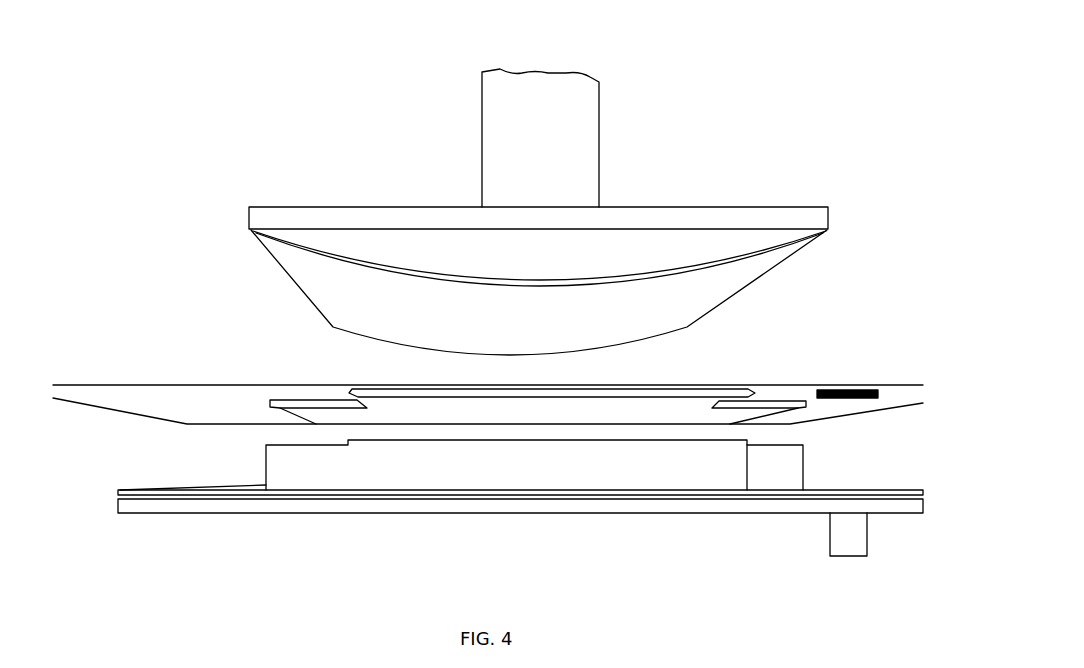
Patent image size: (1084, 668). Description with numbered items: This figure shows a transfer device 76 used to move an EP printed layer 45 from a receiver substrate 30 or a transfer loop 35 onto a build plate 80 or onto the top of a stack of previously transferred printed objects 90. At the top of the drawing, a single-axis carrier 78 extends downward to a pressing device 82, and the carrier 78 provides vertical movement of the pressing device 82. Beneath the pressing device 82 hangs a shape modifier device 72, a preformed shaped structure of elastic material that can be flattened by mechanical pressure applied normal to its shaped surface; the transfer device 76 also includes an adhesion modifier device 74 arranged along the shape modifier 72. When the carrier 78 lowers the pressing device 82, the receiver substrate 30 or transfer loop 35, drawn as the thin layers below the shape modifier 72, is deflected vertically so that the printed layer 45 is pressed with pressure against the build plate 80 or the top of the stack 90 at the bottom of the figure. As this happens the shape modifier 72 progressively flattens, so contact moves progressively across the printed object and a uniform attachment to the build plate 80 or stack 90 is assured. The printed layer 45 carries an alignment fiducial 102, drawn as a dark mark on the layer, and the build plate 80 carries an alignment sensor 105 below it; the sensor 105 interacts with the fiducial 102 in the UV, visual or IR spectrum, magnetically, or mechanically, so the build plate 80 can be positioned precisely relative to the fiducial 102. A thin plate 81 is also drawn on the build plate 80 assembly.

The transfer device 76 is at (409, 97).
The single-axis carrier 78 is at (587, 182).
The pressing device 82 is at (295, 220).
The shape modifier device 72 is at (633, 242).
The adhesion modifier device 74 is at (285, 242).
The receiver substrate 30 is at (112, 395).
The transfer loop 35 is at (488, 404).
The EP printed layer 45 is at (288, 412).
The alignment fiducial 102 is at (870, 393).
The stack of previously transferred printed objects 90 is at (805, 467).
The thin plate 81 is at (527, 493).
The build plate 80 is at (728, 502).
The alignment sensor 105 is at (835, 531).